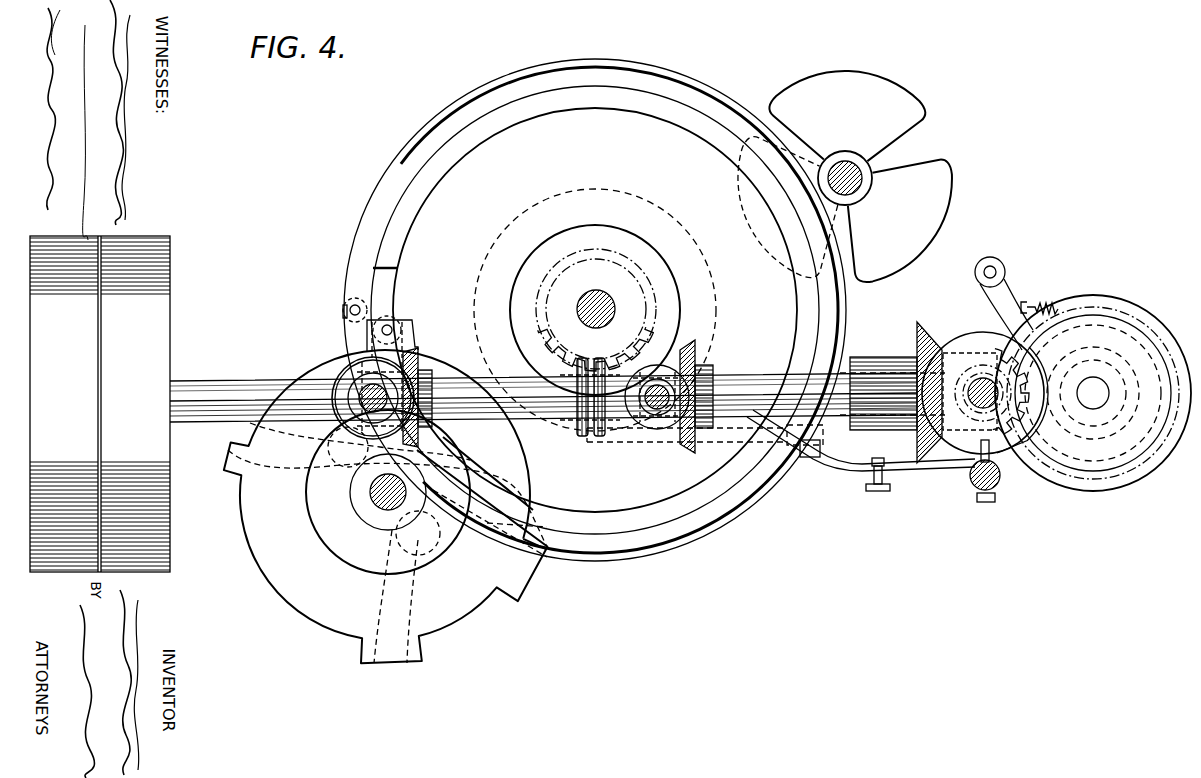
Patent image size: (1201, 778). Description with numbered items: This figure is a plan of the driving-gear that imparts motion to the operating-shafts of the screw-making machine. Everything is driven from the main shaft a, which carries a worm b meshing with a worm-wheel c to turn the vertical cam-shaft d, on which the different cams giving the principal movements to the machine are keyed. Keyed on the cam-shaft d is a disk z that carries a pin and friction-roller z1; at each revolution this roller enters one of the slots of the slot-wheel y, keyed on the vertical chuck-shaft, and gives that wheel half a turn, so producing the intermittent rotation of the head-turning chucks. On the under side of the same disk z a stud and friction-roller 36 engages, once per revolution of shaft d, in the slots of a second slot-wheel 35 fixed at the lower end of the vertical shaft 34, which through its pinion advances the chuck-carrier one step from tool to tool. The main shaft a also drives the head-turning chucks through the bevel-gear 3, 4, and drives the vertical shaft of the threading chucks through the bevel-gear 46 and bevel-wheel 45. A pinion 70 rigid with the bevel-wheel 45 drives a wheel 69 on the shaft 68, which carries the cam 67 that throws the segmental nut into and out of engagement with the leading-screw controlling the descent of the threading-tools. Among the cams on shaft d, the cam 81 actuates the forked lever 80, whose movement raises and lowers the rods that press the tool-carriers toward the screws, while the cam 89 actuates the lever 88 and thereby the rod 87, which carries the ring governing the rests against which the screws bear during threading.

The main shaft a is at (226, 381).
The slot-wheel y is at (386, 506).
The disk z is at (595, 310).
The pin and friction-roller z1 is at (394, 320).
The stud and friction-roller 36 is at (350, 304).
The cam 81 is at (672, 216).
The cam 89 is at (683, 293).
The vertical cam-shaft d is at (597, 295).
The worm-wheel c is at (545, 335).
The worm b is at (580, 436).
The bevel-gear 4 is at (647, 378).
The bevel-gear 3 is at (702, 372).
The slot-wheel 35 is at (845, 176).
The vertical shaft 34 is at (851, 163).
The lever 80 is at (836, 430).
The lever 88 is at (905, 476).
The bevel-gear 46 is at (919, 322).
The bevel-wheel 45 is at (958, 345).
The pinion 70 is at (975, 420).
The wheel 69 is at (1115, 315).
The cam 67 is at (1093, 386).
The shaft 68 is at (1090, 403).
The rod 87 is at (996, 486).